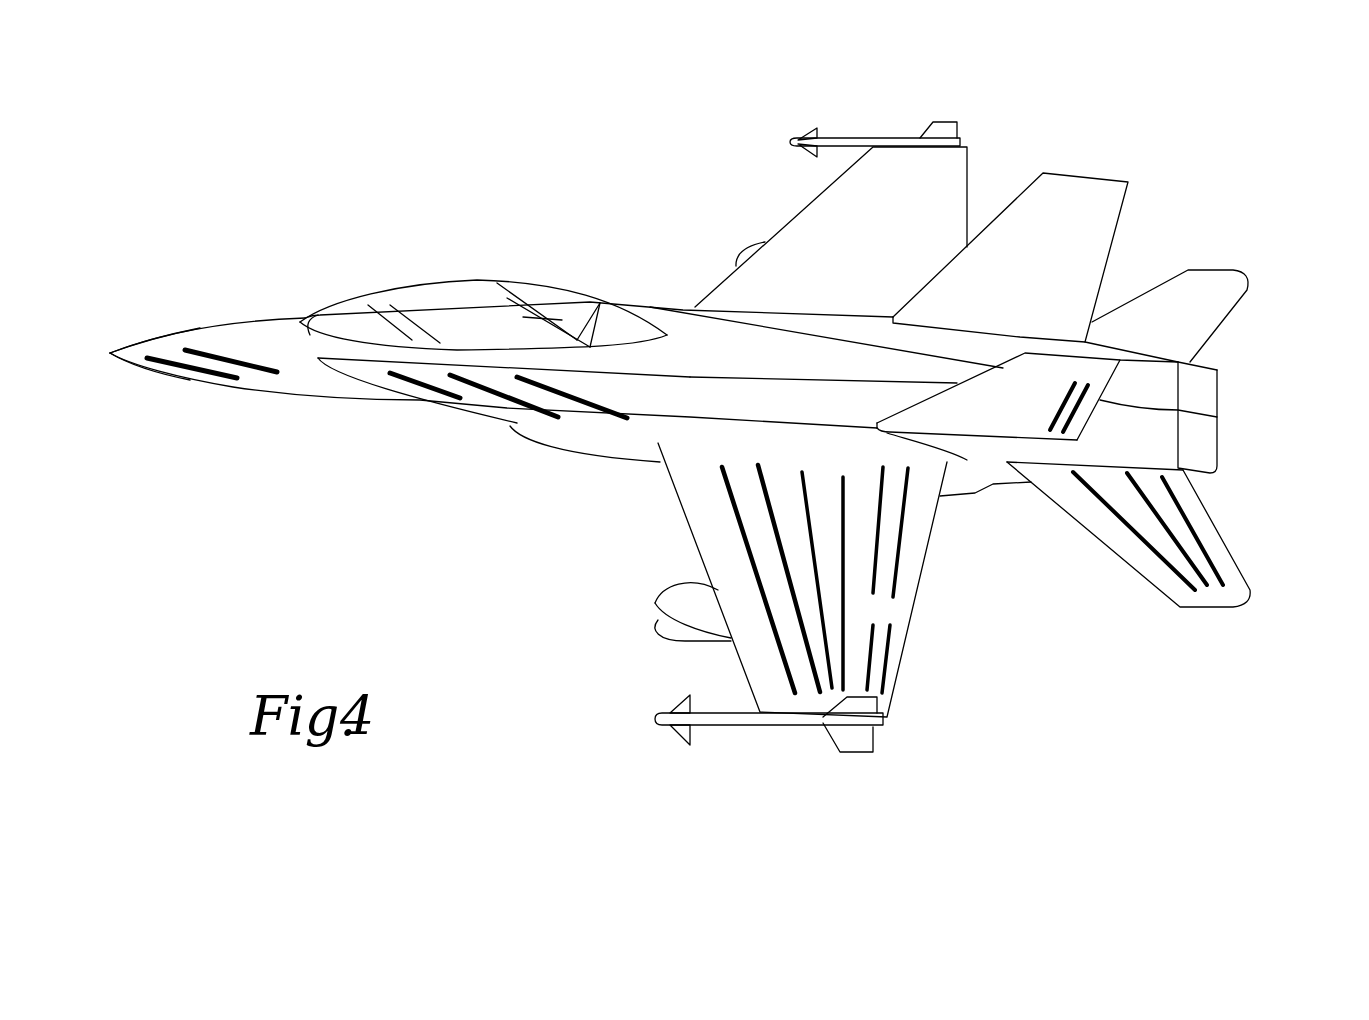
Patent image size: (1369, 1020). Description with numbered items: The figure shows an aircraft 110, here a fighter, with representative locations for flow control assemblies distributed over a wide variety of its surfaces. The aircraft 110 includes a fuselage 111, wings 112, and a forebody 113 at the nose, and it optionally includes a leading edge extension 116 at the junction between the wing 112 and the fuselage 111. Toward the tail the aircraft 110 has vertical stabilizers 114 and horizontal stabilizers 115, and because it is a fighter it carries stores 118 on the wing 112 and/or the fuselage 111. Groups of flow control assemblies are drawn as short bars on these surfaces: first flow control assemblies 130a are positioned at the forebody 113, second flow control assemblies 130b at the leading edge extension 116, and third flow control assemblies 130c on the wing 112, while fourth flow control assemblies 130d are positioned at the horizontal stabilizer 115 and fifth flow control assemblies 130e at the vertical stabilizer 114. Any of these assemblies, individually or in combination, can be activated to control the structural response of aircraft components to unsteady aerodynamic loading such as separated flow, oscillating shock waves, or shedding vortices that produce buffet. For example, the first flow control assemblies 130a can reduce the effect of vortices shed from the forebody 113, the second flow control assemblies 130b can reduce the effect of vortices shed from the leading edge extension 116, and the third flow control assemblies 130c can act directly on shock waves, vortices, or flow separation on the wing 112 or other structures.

The aircraft 110 is at (323, 170).
The fuselage 111 is at (650, 310).
The wing 112 is at (687, 480).
The forebody 113 is at (165, 400).
The vertical stabilizer 114 is at (1105, 362).
The horizontal stabilizer 115 is at (1238, 600).
The leading edge extension 116 is at (480, 407).
The stores 118 is at (663, 640).
The first flow control assemblies 130a is at (238, 352).
The second flow control assemblies 130b is at (400, 385).
The third flow control assemblies 130c is at (768, 643).
The fourth flow control assemblies 130d is at (1210, 537).
The fifth flow control assemblies 130e is at (1083, 420).